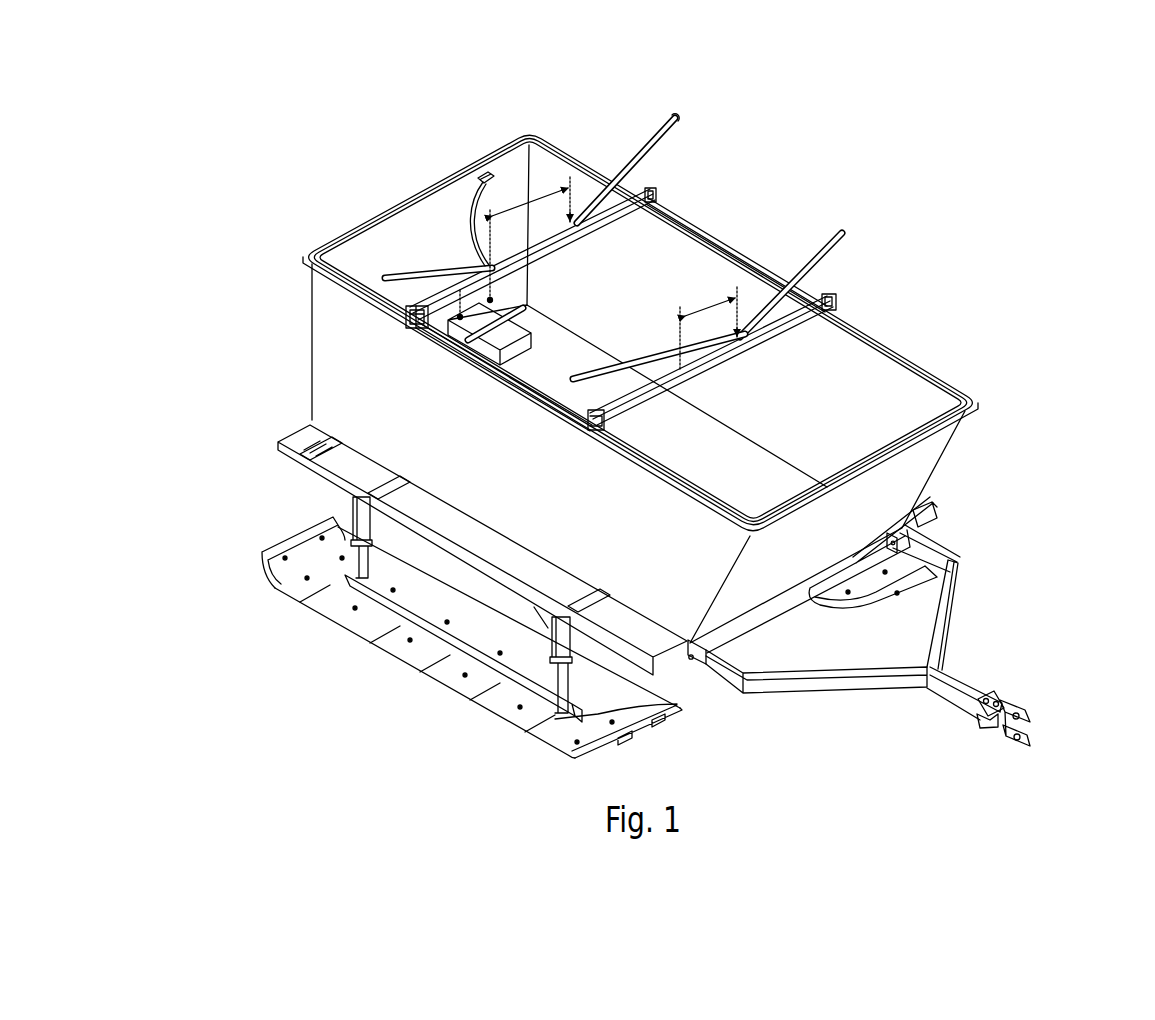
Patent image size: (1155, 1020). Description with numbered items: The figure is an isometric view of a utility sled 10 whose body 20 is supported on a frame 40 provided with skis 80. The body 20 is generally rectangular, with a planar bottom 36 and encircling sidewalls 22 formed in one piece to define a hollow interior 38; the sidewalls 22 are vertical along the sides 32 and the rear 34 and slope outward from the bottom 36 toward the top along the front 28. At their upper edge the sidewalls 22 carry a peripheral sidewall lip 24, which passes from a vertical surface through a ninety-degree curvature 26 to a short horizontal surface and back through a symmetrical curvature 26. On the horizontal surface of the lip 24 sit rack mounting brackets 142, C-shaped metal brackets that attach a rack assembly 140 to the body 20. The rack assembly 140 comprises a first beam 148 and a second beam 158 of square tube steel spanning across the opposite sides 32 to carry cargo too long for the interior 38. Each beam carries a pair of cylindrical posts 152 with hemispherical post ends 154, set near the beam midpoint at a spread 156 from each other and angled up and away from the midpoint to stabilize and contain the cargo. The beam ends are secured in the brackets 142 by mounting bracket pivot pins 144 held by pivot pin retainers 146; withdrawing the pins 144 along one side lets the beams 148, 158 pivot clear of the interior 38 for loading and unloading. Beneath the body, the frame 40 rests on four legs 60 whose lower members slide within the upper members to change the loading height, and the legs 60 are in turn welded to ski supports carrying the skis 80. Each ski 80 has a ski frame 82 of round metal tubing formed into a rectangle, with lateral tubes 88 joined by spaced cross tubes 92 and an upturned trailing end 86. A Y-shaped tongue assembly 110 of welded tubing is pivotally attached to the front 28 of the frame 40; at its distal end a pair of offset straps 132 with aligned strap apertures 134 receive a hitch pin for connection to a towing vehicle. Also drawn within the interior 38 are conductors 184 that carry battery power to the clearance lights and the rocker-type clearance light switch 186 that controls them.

The utility sled 10 is at (186, 166).
The body 20 is at (1005, 371).
The sidewalls 22 is at (311, 312).
The sidewall lip 24 is at (333, 238).
The curvature 26 is at (303, 262).
The front 28 is at (898, 497).
The sides 32 is at (926, 388).
The rear 34 is at (368, 212).
The bottom 36 is at (790, 478).
The interior 38 is at (872, 372).
The frame 40 is at (274, 443).
The legs 60 is at (582, 683).
The skis 80 is at (444, 713).
The ski frame 82 is at (306, 593).
The trailing end 86 is at (286, 542).
The lateral tubes 88 is at (561, 743).
The cross tubes 92 is at (408, 653).
The tongue assembly 110 is at (1030, 596).
The offset straps 132 is at (997, 699).
The strap apertures 134 is at (1023, 716).
The rack assembly 140 is at (674, 194).
The rack mounting brackets 142 is at (834, 304).
The mounting bracket pivot pin 144 is at (422, 328).
The pivot pin retainers 146 is at (412, 320).
The first beam 148 is at (828, 294).
The posts 152 is at (647, 158).
The post end 154 is at (678, 119).
The spread 156 is at (552, 186).
The second beam 158 is at (652, 193).
The conductors 184 is at (455, 200).
The clearance light switch 186 is at (482, 175).